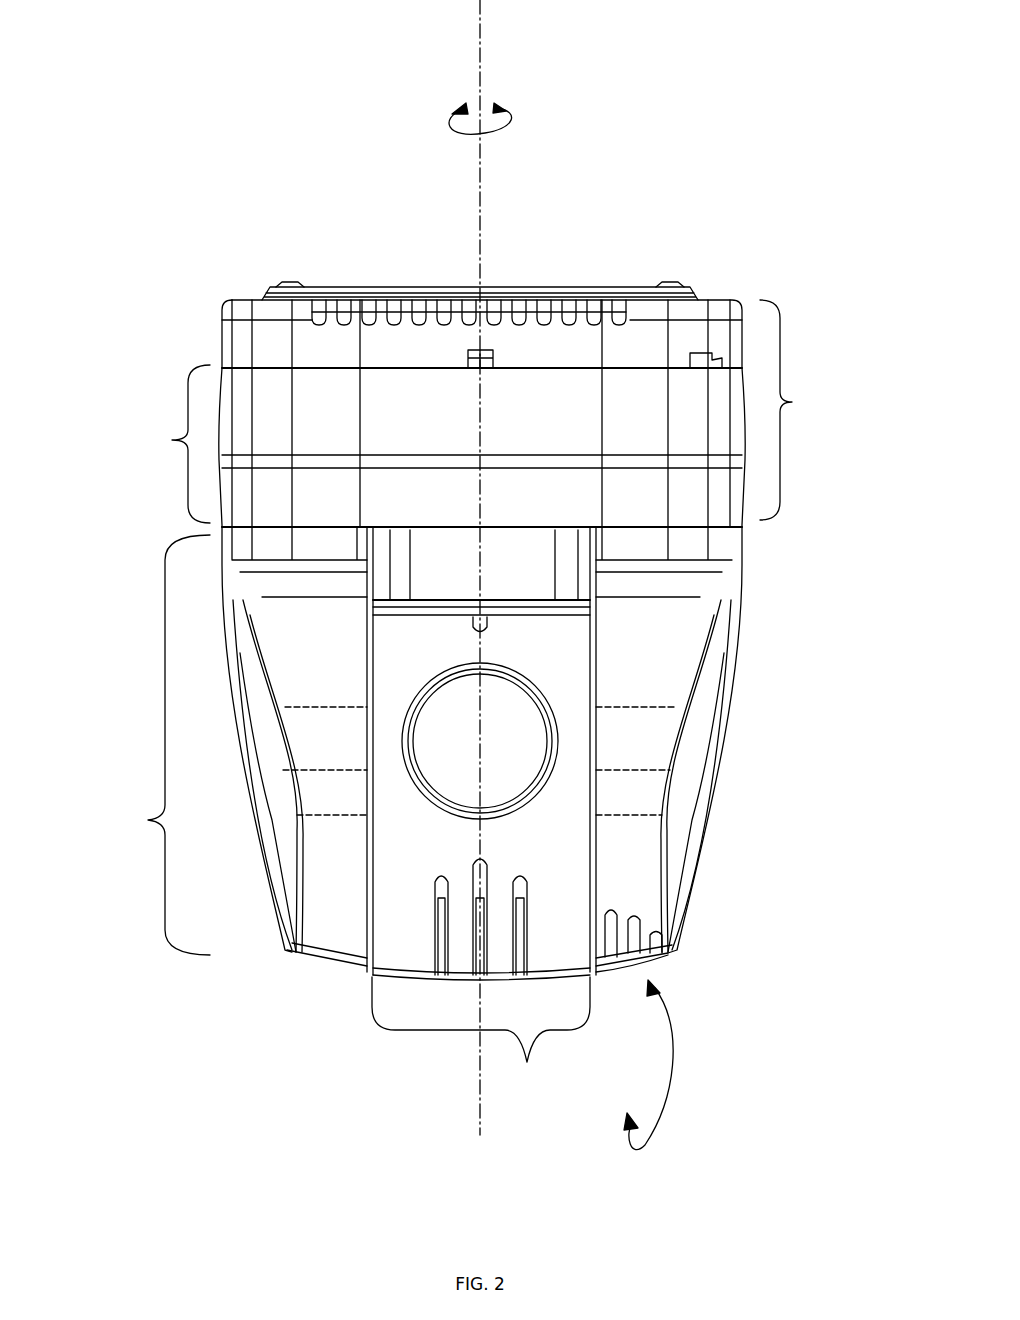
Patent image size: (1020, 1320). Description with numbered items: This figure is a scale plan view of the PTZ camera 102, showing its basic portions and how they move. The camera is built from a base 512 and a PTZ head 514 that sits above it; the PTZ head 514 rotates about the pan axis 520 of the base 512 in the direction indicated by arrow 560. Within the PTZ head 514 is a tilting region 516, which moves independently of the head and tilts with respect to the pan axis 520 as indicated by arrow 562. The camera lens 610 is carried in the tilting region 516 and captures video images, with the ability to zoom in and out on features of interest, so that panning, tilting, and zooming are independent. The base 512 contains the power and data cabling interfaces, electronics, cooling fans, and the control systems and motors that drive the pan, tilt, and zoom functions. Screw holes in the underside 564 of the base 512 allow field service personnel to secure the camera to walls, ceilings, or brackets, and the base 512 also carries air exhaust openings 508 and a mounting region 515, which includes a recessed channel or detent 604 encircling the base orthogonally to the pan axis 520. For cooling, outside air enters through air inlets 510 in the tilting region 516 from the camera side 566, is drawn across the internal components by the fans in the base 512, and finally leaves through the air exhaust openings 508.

The PTZ camera 102 is at (399, 168).
The air exhaust openings 508 is at (570, 182).
The air inlets 510 is at (480, 882).
The base 512 is at (812, 410).
The PTZ head 514 is at (130, 745).
The mounting region 515 is at (157, 444).
The tilting region 516 is at (481, 1035).
The pan axis 520 is at (482, 54).
The arrow 560 is at (514, 127).
The arrow 562 is at (668, 1068).
The underside 564 is at (390, 285).
The camera side 566 is at (668, 955).
The recessed channel or detent 604 is at (376, 455).
The camera lens 610 is at (528, 763).